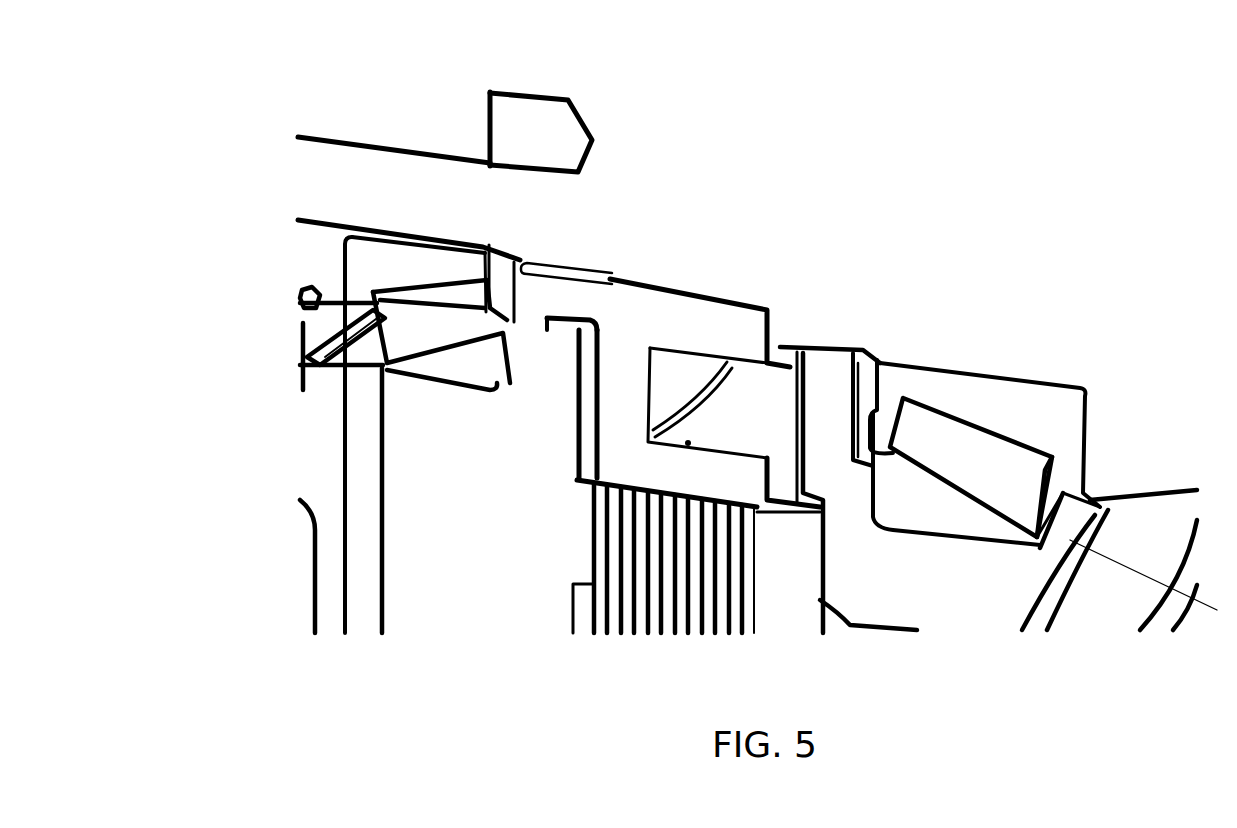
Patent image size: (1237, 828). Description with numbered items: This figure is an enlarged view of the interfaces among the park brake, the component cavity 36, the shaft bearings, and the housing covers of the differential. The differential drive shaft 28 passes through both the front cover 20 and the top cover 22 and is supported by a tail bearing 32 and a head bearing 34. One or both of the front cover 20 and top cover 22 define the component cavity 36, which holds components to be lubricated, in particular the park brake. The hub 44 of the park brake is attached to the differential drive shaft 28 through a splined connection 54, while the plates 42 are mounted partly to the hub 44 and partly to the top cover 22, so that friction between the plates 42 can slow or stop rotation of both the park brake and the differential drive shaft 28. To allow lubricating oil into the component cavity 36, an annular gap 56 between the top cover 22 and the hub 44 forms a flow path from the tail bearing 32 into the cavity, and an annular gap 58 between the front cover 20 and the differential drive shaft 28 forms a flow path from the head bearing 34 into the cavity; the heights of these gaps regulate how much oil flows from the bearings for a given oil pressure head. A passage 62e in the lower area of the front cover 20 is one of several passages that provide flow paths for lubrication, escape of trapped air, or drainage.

The differential drive shaft 28 is at (683, 110).
The splined connection 54 is at (607, 273).
The annular gap 56 is at (577, 318).
The component cavity 36 is at (778, 367).
The annular gap 58 is at (852, 347).
The head bearing 34 is at (968, 393).
The tail bearing 32 is at (447, 363).
The hub 44 is at (607, 425).
The passage 62e is at (370, 568).
The top cover 22 is at (433, 600).
The plates 42 is at (653, 615).
The front cover 20 is at (905, 590).